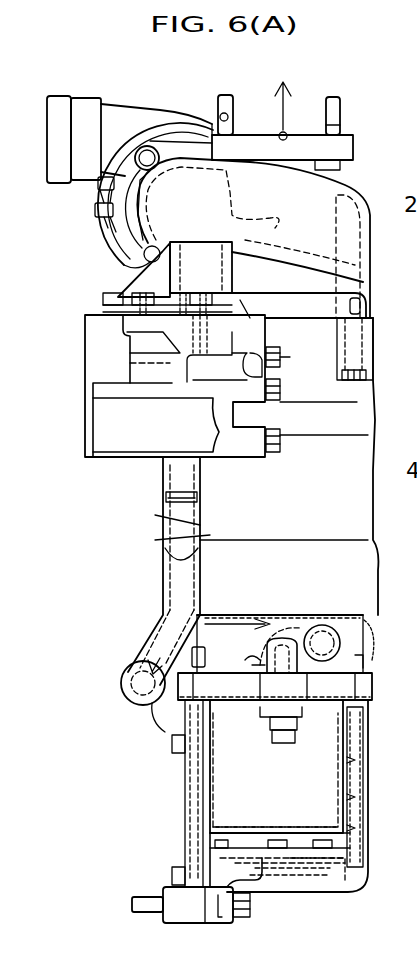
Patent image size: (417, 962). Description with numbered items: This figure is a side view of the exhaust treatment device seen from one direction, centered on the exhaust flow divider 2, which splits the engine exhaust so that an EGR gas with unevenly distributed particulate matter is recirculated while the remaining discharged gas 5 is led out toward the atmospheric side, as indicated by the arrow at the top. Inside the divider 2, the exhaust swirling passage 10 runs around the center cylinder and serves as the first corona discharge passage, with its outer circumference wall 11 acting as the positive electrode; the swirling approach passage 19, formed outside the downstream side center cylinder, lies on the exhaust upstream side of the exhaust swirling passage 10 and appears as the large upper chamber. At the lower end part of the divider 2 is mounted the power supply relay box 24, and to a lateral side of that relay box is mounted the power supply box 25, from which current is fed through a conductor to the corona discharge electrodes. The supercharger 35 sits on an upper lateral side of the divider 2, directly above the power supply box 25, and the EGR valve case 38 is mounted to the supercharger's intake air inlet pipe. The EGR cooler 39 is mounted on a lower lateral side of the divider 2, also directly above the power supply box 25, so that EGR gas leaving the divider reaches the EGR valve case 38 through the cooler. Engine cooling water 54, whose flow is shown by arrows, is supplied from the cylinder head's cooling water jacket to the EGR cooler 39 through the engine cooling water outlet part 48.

The exhaust flow divider 2 is at (112, 290).
The discharged gas 5 is at (290, 118).
The exhaust swirling passage 10 is at (225, 531).
The outer circumference wall 11 is at (215, 540).
The swirling approach passage 19 is at (325, 198).
The power supply relay box 24 is at (275, 813).
The power supply box 25 is at (330, 863).
The supercharger 35 is at (174, 112).
The EGR valve case 38 is at (377, 320).
The EGR cooler 39 is at (304, 620).
The engine cooling water outlet part 48 is at (110, 360).
The engine cooling water 54 is at (228, 630).